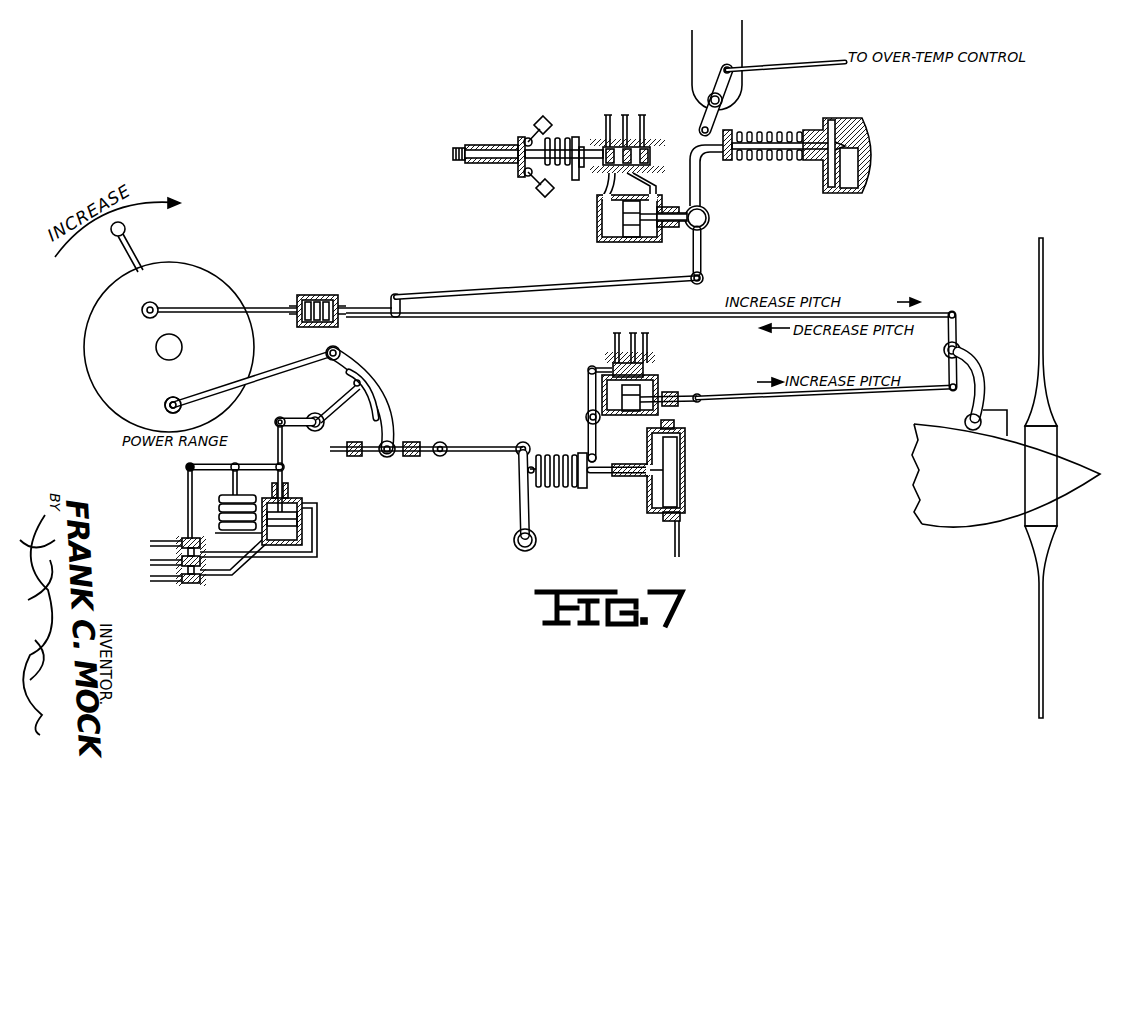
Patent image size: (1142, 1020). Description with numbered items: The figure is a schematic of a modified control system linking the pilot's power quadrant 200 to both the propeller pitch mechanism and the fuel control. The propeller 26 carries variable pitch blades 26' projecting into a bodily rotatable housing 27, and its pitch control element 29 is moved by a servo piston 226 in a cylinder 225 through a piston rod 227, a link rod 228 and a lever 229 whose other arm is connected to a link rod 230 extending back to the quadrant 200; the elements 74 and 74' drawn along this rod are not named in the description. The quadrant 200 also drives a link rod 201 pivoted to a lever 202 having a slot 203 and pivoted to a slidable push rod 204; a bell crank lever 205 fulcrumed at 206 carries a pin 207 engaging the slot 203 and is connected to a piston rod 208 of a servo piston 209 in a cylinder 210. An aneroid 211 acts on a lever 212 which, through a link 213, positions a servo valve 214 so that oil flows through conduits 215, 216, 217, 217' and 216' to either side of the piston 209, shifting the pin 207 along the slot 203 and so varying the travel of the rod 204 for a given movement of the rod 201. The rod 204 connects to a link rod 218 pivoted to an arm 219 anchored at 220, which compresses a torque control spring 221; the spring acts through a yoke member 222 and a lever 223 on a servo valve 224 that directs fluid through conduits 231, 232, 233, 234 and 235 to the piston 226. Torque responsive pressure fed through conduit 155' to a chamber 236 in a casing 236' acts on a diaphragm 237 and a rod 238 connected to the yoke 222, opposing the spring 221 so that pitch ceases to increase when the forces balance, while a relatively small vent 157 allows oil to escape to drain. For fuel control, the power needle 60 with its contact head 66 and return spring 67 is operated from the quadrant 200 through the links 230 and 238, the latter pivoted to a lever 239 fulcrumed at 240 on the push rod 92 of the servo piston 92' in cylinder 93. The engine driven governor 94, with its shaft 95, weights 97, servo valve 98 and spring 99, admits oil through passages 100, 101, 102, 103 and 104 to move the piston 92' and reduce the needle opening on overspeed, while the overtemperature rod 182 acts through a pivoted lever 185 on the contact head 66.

The propeller 26 is at (1056, 472).
The variable pitch propeller blades 26' is at (1054, 478).
The bodily rotatable housing 27 is at (1075, 471).
The propeller pitch control element 29 is at (976, 377).
The power needle valve 60 is at (768, 155).
The contact head 66 is at (731, 133).
The spring 67 is at (786, 132).
The dashpot coupling 74 is at (252, 295).
The coupling rod 74' is at (341, 331).
The push rod 92 is at (663, 243).
The servo piston 92' is at (594, 222).
The piston cylinder 93 is at (614, 233).
The engine driven speed governor 94 is at (517, 141).
The governor shaft 95 is at (492, 160).
The governor weights 97 is at (548, 117).
The servo valve 98 is at (652, 155).
The spring 99 is at (557, 148).
The passage 100 is at (627, 114).
The passage 101 is at (605, 187).
The passage 102 is at (650, 191).
The passage 103 is at (644, 114).
The passage 104 is at (609, 114).
The conduit 155' is at (707, 540).
The vent 157 is at (682, 515).
The rod 182 is at (783, 63).
The pivoted lever 185 is at (704, 123).
The power quadrant 200 is at (192, 288).
The link rod 201 is at (236, 364).
The lever 202 is at (384, 401).
The slot 203 is at (374, 401).
The slidable push rod 204 is at (384, 459).
The bell crank lever 205 is at (332, 402).
The fulcrum 206 is at (311, 415).
The pin 207 is at (357, 380).
The piston rod 208 is at (279, 436).
The servo piston 209 is at (297, 523).
The cylinder 210 is at (300, 540).
The aneroid 211 is at (217, 508).
The lever 212 is at (208, 470).
The link 213 is at (186, 490).
The servo valve 214 is at (190, 586).
The conduit 215 is at (160, 563).
The conduit 216 is at (244, 571).
The conduit 216' is at (156, 599).
The conduit 217 is at (270, 545).
The conduit 217' is at (149, 532).
The link rod 218 is at (471, 449).
The arm 219 is at (519, 511).
The anchor pivot 220 is at (514, 548).
The torque control spring 221 is at (556, 490).
The yoke member 222 is at (583, 490).
The lever 223 is at (605, 403).
The servo valve 224 is at (658, 368).
The cylinder 225 is at (603, 420).
The servo piston 226 is at (588, 402).
The piston rod 227 is at (691, 405).
The link rod 228 is at (845, 396).
The lever 229 is at (961, 331).
The link rod 230 is at (652, 313).
The conduit 231 is at (637, 341).
The conduit 232 is at (597, 373).
The conduit 233 is at (659, 381).
The conduit 234 is at (650, 350).
The conduit 235 is at (613, 357).
The chamber 236 is at (690, 470).
The casing 236' is at (707, 447).
The torque responsive diaphragm 237 is at (671, 444).
The rod 238 is at (463, 293).
The lever 239 is at (702, 262).
The fulcrum 240 is at (710, 219).